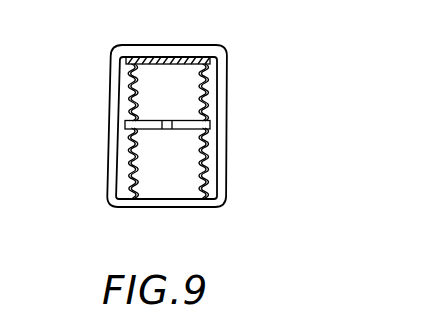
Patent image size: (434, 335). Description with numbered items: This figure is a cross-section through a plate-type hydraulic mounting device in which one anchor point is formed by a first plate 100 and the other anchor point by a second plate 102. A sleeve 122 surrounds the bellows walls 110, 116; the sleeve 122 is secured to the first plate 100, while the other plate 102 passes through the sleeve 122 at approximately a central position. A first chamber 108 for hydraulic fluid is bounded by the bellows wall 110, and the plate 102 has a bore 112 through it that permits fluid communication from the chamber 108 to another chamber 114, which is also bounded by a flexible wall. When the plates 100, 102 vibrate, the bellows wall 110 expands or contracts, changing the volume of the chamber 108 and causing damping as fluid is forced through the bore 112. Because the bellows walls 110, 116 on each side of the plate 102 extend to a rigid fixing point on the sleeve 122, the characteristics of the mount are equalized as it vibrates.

The first plate 100 is at (173, 60).
The plate 102 is at (210, 124).
The first chamber 108 is at (168, 93).
The bellows wall 110 is at (205, 103).
The bore 112 is at (160, 131).
The chamber 114 is at (170, 163).
The bellows wall 116 is at (205, 163).
The sleeve 122 is at (110, 120).